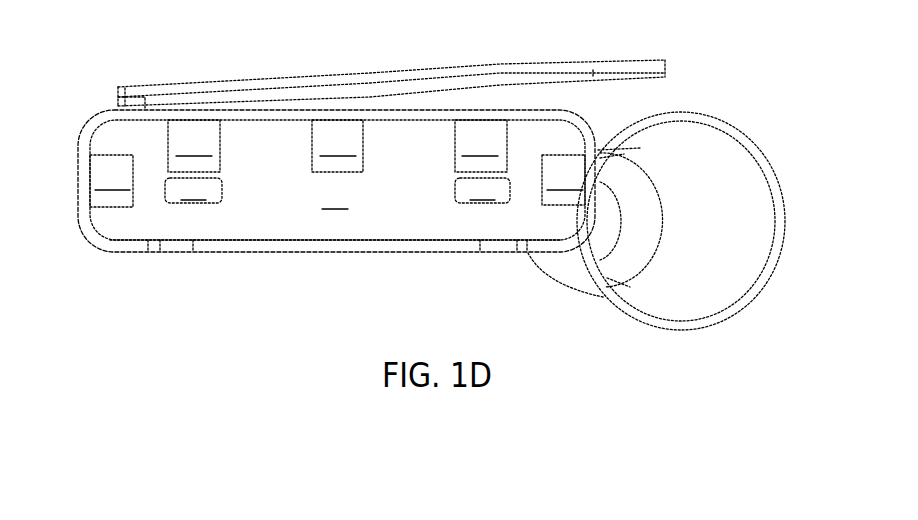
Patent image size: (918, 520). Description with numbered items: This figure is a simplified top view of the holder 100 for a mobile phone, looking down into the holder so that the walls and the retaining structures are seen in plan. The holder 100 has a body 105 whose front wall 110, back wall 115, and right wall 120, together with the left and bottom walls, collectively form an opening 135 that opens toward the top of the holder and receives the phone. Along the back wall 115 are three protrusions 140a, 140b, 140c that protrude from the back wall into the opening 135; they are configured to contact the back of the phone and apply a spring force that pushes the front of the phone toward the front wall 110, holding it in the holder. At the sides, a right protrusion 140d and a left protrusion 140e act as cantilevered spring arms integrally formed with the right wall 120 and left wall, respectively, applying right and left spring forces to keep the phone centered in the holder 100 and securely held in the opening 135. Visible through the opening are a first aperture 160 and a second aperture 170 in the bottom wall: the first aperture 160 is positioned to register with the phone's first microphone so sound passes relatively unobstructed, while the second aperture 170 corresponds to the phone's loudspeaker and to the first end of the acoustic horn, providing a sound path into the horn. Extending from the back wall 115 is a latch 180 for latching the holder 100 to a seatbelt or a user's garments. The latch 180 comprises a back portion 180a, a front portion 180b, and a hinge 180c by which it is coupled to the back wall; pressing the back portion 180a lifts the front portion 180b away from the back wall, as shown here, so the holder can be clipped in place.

The holder 100 is at (292, 320).
The body 105 is at (92, 247).
The front wall 110 is at (197, 253).
The back wall 115 is at (437, 125).
The right wall 120 is at (600, 143).
The opening 135 is at (335, 200).
The protrusion 140a is at (194, 146).
The protrusion 140b is at (337, 146).
The protrusion 140c is at (481, 146).
The right protrusion 140d is at (563, 180).
The left protrusion 140e is at (111, 181).
The first aperture 160 is at (193, 190).
The second aperture 170 is at (482, 190).
The latch 180 is at (391, 85).
The back portion 180a is at (150, 85).
The front portion 180b is at (608, 60).
The hinge 180c is at (248, 113).